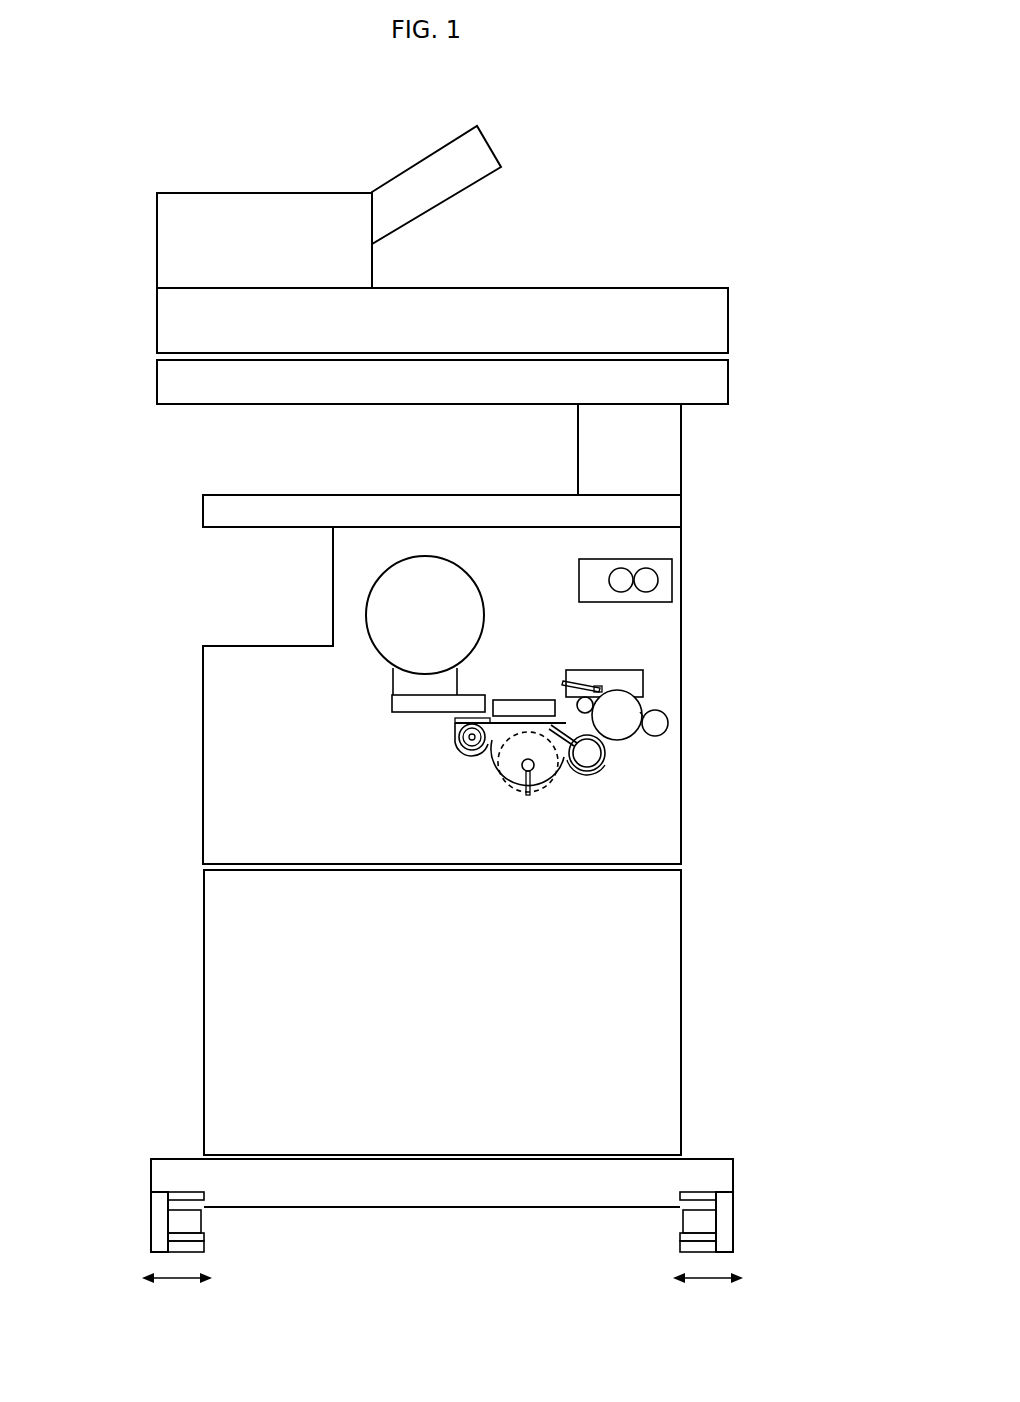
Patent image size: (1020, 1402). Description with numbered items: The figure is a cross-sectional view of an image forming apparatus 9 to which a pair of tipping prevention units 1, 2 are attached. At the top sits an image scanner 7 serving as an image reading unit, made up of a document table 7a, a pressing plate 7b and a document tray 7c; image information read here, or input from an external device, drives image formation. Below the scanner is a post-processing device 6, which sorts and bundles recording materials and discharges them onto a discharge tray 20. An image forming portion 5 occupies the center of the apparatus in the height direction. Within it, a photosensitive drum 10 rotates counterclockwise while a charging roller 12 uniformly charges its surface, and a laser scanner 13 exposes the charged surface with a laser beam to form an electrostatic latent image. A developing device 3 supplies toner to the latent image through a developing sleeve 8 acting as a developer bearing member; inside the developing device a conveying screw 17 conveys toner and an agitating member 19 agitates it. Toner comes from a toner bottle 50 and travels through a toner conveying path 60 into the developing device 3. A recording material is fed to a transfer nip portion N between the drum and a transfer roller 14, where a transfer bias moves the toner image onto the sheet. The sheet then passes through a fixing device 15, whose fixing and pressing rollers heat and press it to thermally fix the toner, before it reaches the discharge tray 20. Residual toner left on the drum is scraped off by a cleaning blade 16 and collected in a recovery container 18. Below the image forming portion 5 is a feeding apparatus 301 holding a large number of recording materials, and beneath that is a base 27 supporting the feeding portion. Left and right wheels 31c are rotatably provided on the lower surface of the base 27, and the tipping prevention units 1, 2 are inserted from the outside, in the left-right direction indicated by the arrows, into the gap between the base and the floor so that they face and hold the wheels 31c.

The image forming apparatus 9 is at (660, 212).
The image scanner 7 is at (430, 405).
The document table 7a is at (722, 379).
The pressing plate 7b is at (717, 317).
The document tray 7c is at (485, 151).
The post-processing device 6 is at (681, 468).
The discharge tray 20 is at (410, 495).
The image forming portion 5 is at (305, 675).
The toner bottle 50 is at (380, 588).
The toner conveying path 60 is at (405, 712).
The laser scanner 13 is at (515, 700).
The conveying screw 17 is at (455, 740).
The developing device 3 is at (487, 765).
The agitating member 19 is at (532, 786).
The developing sleeve 8 is at (590, 765).
The recovery container 18 is at (628, 670).
The photosensitive drum 10 is at (640, 740).
The transfer roller 14 is at (668, 720).
The transfer nip portion N is at (647, 700).
The charging roller 12 is at (576, 702).
The cleaning blade 16 is at (604, 688).
The fixing device 15 is at (672, 580).
The feeding apparatus 301 is at (135, 887).
The base 27 is at (710, 1162).
The tipping prevention unit 1 is at (160, 1228).
The tipping prevention unit 2 is at (727, 1225).
The wheel 31c is at (193, 1222).